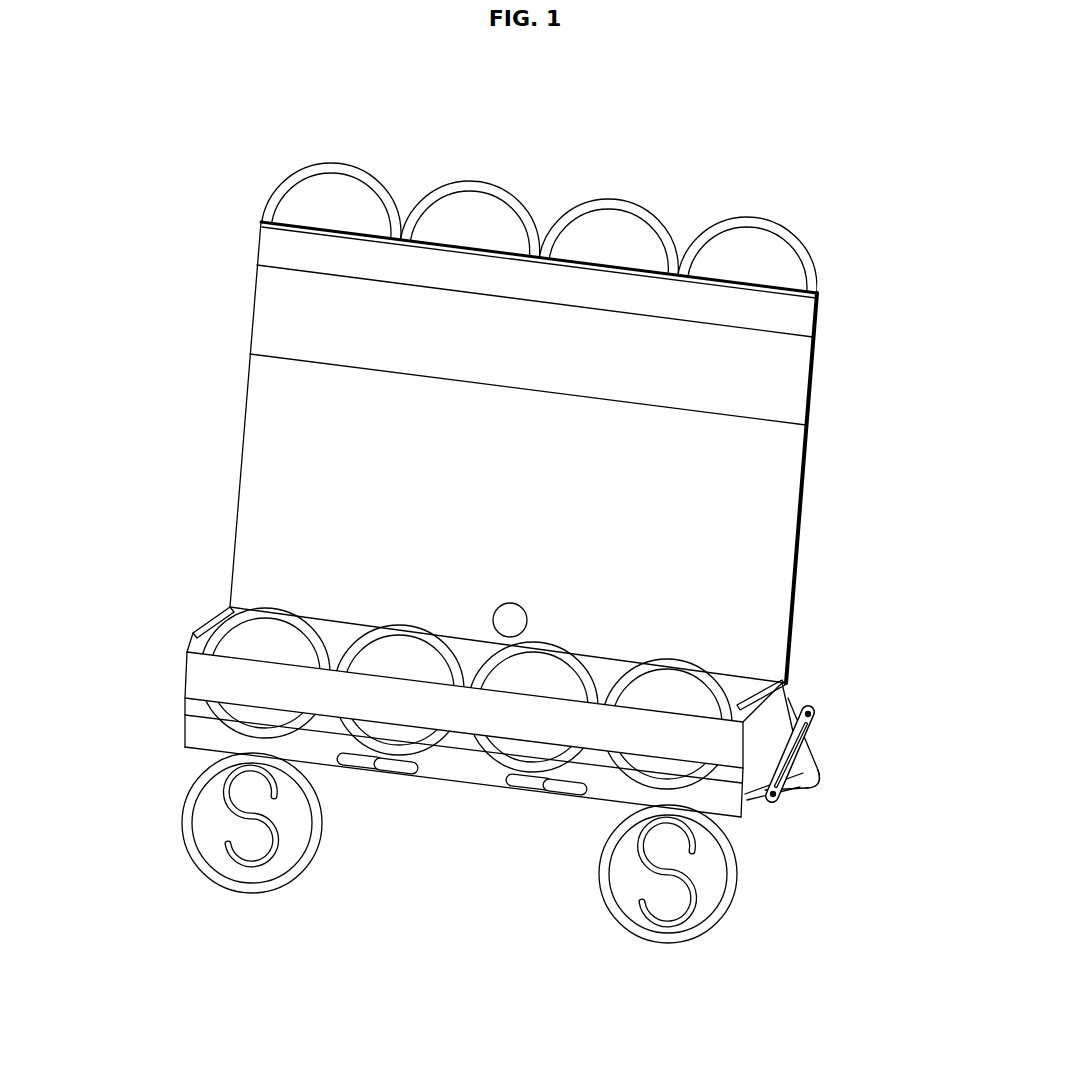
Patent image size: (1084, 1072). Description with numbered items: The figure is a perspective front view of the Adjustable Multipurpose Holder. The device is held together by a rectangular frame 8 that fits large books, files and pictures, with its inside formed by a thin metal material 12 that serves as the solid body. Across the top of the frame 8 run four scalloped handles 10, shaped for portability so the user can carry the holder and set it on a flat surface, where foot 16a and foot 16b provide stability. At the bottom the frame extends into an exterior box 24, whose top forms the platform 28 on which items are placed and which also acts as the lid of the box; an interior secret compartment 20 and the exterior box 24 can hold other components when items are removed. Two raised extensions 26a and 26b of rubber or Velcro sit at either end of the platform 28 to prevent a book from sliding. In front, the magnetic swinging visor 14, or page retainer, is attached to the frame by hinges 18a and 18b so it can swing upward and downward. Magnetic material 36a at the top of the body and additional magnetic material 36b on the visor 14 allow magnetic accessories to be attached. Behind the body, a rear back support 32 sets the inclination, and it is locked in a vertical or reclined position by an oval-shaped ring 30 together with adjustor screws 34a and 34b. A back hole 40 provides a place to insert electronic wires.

The frame 8 is at (601, 262).
The scalloped handles 10 is at (606, 260).
The thin metal material 12 is at (499, 423).
The magnetic swinging visor 14 is at (394, 724).
The foot 16a is at (183, 804).
The foot 16b is at (773, 874).
The hinge 18a is at (388, 799).
The hinge 18b is at (540, 810).
The interior secret compartment 20 is at (854, 744).
The exterior box 24 is at (768, 722).
The raised extension 26a is at (138, 574).
The raised extension 26b is at (847, 669).
The platform 28 is at (565, 620).
The oval-shaped ring 30 is at (873, 790).
The rear back support 32 is at (858, 726).
The adjustor screw 34a is at (871, 488).
The adjustor screw 34b is at (152, 414).
The magnetic material 36a is at (584, 345).
The magnetic material 36b is at (393, 674).
The back hole 40 is at (718, 556).